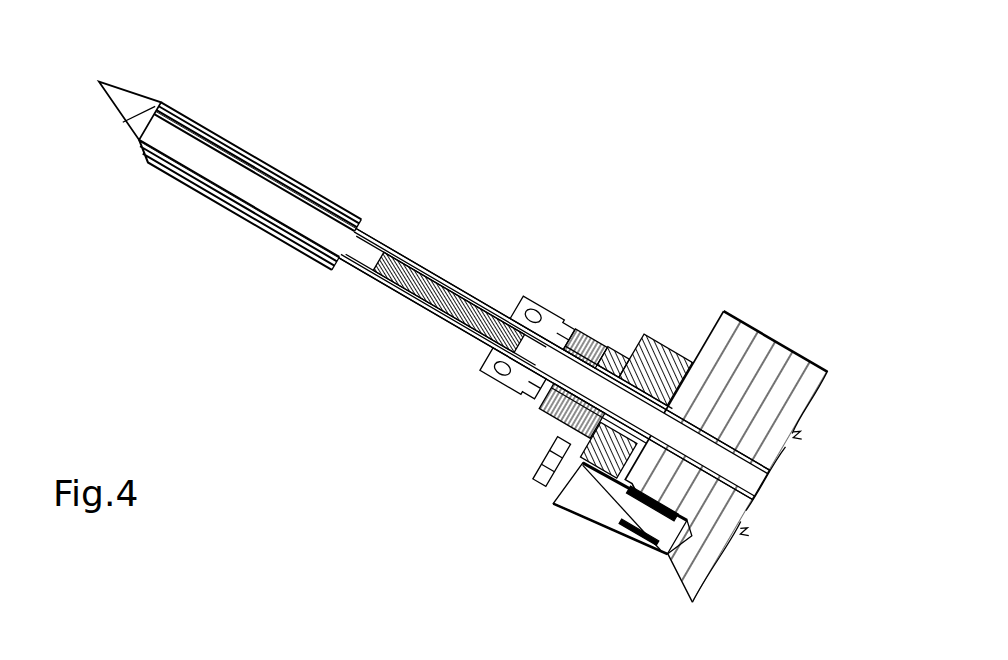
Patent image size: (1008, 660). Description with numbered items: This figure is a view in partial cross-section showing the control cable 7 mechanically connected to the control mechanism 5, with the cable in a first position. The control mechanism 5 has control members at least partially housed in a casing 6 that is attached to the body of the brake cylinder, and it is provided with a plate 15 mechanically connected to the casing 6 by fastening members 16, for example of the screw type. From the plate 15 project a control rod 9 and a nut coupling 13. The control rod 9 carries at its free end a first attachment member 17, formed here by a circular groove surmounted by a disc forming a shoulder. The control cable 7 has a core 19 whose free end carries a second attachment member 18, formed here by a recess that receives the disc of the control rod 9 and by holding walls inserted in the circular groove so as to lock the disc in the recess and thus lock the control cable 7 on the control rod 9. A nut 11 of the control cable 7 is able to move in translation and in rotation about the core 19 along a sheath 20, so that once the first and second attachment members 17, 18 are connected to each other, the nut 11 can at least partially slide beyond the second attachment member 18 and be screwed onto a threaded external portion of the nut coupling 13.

The control mechanism 5 is at (609, 136).
The casing 6 is at (777, 360).
The control cable 7 is at (184, 117).
The control rod 9 is at (556, 375).
The nut 11 is at (562, 308).
The nut coupling 13 is at (572, 452).
The plate 15 is at (672, 350).
The fastening members 16 is at (545, 482).
The first attachment member 17 is at (470, 342).
The second attachment member 18 is at (568, 316).
The core 19 is at (398, 248).
The sheath 20 is at (375, 228).